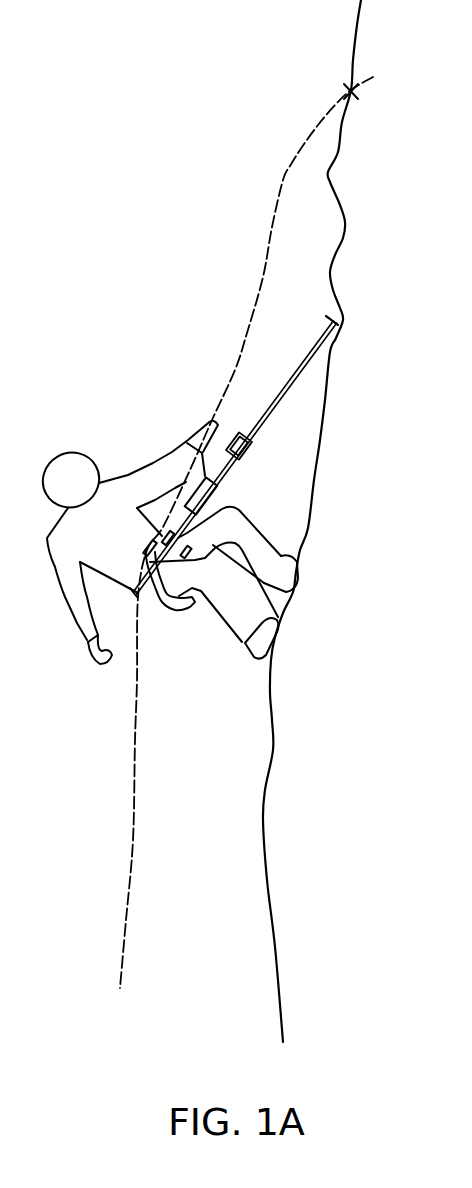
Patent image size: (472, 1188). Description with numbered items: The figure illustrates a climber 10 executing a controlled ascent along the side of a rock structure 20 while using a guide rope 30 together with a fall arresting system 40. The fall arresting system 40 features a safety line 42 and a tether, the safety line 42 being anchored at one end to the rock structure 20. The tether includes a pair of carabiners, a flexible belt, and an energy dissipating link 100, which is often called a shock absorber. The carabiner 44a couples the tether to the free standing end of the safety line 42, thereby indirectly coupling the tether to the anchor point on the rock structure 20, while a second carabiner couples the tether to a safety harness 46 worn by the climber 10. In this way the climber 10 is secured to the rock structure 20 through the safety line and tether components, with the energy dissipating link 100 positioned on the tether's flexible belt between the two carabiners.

The climber 10 is at (93, 441).
The rock structure 20 is at (352, 45).
The guide rope 30 is at (267, 273).
The fall arresting system 40 is at (288, 373).
The safety line 42 is at (300, 384).
The carabiner 44a is at (257, 453).
The safety harness 46 is at (176, 620).
The energy dissipating link 100 is at (219, 497).